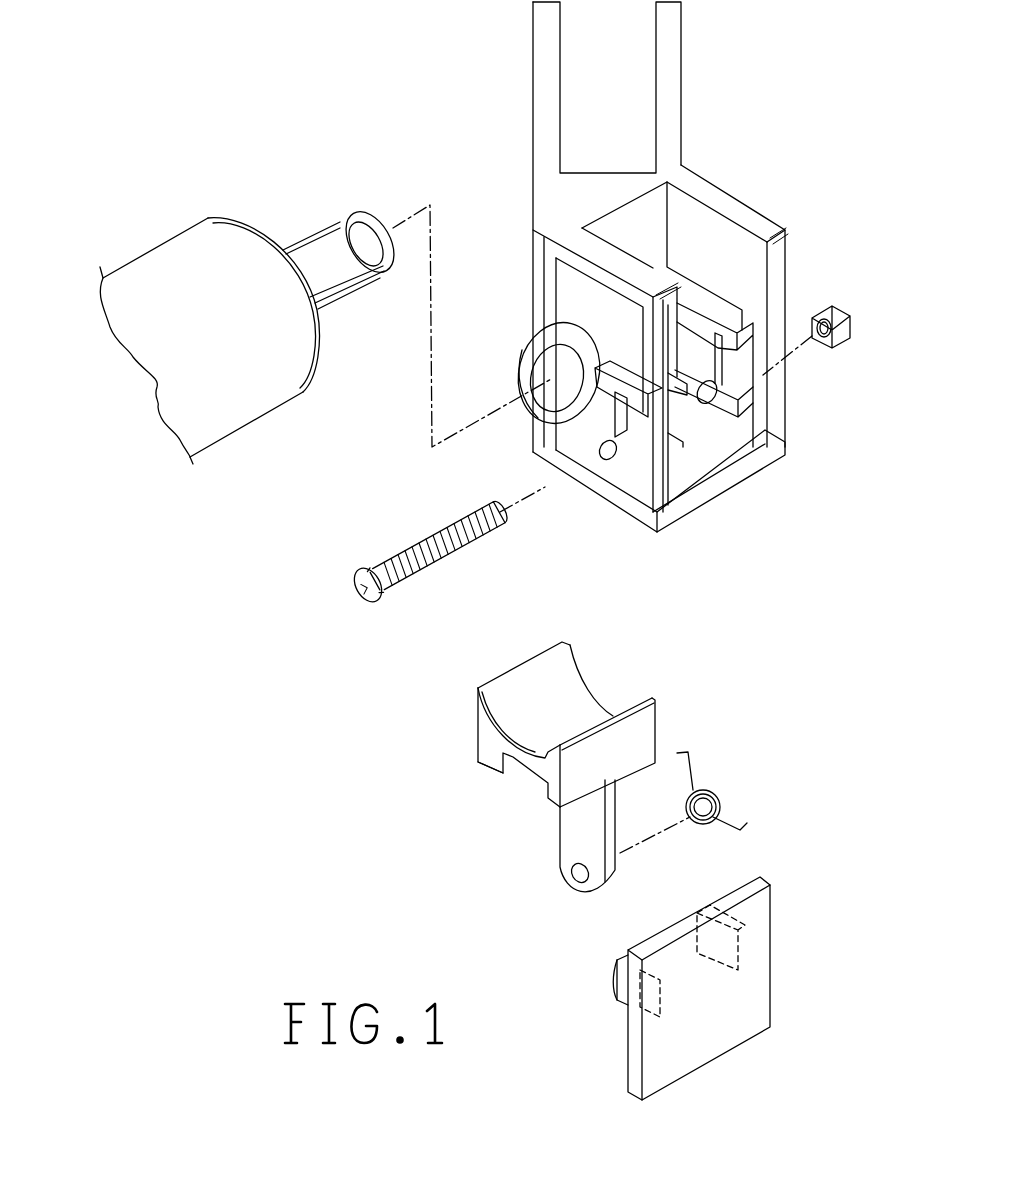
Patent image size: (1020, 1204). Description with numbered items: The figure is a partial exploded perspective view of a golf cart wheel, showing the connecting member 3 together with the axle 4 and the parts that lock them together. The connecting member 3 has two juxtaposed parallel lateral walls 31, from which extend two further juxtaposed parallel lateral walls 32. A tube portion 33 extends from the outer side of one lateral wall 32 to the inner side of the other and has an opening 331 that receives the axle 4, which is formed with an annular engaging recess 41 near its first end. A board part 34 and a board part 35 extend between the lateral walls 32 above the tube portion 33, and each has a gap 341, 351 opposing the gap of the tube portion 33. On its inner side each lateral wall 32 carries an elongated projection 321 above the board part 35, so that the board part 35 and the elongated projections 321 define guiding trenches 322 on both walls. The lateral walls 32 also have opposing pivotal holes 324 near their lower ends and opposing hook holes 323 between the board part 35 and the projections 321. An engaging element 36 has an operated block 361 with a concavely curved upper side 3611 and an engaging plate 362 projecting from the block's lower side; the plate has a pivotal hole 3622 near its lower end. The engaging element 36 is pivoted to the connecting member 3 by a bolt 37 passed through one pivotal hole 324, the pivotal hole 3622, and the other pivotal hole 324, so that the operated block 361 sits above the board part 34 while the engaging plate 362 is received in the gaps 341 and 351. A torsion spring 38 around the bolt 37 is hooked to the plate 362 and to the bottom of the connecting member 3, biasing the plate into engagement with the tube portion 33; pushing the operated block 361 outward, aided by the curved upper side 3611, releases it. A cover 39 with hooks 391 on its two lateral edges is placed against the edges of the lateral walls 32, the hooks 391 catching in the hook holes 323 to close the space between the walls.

The connecting member 3 is at (722, 152).
The lateral walls 31 is at (540, 48).
The lateral walls 32 is at (617, 270).
The tube portion 33 is at (532, 333).
The opening 331 is at (553, 378).
The board part 34 is at (717, 317).
The gap 341 is at (740, 300).
The elongated projection 321 is at (610, 457).
The guiding trenches 322 is at (743, 397).
The hook holes 323 is at (612, 420).
The pivotal holes 324 is at (600, 440).
The board part 35 is at (677, 448).
The gap 351 is at (690, 452).
The bolt 37 is at (400, 552).
The axle 4 is at (323, 247).
The annular engaging recess 41 is at (365, 222).
The engaging element 36 is at (652, 692).
The concavely curved upper side 3611 is at (567, 692).
The operated block 361 is at (492, 748).
The engaging plate 362 is at (575, 828).
The pivotal hole 3622 is at (572, 877).
The torsion spring 38 is at (715, 797).
The cover 39 is at (767, 970).
The hooks 391 is at (615, 980).